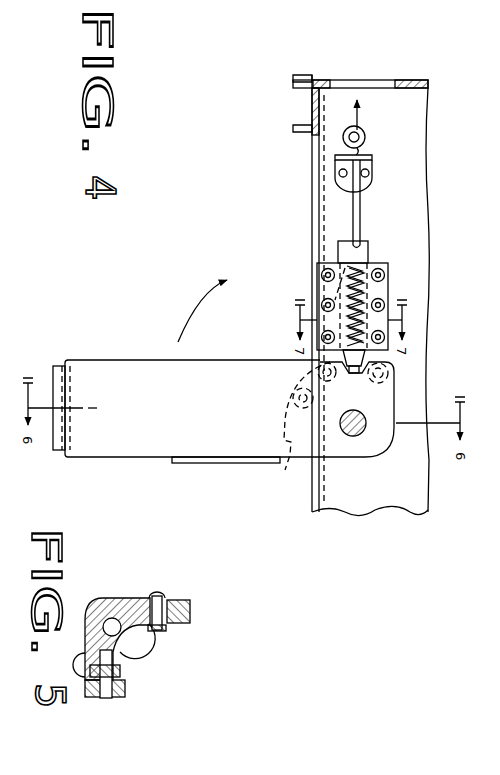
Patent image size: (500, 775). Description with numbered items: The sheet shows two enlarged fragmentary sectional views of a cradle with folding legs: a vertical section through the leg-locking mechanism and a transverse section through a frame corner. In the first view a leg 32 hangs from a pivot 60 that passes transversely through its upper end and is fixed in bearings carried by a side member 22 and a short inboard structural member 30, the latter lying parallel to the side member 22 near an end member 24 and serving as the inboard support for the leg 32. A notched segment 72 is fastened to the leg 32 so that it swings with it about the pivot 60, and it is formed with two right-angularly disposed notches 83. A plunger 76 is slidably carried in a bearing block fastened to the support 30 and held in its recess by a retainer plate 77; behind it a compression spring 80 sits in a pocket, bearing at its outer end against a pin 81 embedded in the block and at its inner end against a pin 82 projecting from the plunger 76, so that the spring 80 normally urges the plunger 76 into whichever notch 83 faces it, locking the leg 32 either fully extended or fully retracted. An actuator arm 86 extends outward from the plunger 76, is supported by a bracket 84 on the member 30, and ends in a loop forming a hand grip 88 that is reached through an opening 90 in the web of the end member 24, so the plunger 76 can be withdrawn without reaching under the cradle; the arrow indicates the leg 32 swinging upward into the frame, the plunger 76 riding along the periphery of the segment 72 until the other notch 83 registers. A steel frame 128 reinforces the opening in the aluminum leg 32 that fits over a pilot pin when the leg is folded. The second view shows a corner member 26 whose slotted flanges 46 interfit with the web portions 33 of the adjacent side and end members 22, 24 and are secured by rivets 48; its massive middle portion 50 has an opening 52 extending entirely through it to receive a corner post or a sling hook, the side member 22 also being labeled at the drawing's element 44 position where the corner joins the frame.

In FIG. 5, the side member 22 is at (118, 702).
In FIG. 4, the end member 24 is at (408, 77).
In FIG. 5, the corner member 26 is at (108, 600).
In FIG. 4, the structural member 30 is at (422, 185).
In FIG. 4, the leg 32 is at (113, 447).
In FIG. 5, the web portion 33 is at (185, 627).
In FIG. 5, the frame wall 44 is at (180, 597).
In FIG. 5, the slotted flange 46 is at (156, 596).
In FIG. 5, the rivet 48 is at (148, 597).
In FIG. 5, the middle portion 50 is at (128, 640).
In FIG. 5, the opening 52 is at (90, 616).
In FIG. 4, the pivot 60 is at (358, 434).
In FIG. 4, the notched segment 72 is at (331, 402).
In FIG. 4, the plunger 76 is at (369, 246).
In FIG. 4, the retainer plate 77 is at (385, 276).
In FIG. 4, the compression spring 80 is at (317, 283).
In FIG. 4, the pin 81 is at (326, 225).
In FIG. 4, the pin 82 is at (352, 374).
In FIG. 4, the notch 83 is at (390, 372).
In FIG. 4, the bracket 84 is at (372, 162).
In FIG. 4, the actuator arm 86 is at (360, 205).
In FIG. 4, the hand grip 88 is at (359, 128).
In FIG. 4, the opening 90 is at (383, 80).
In FIG. 4, the steel frame 128 is at (225, 460).